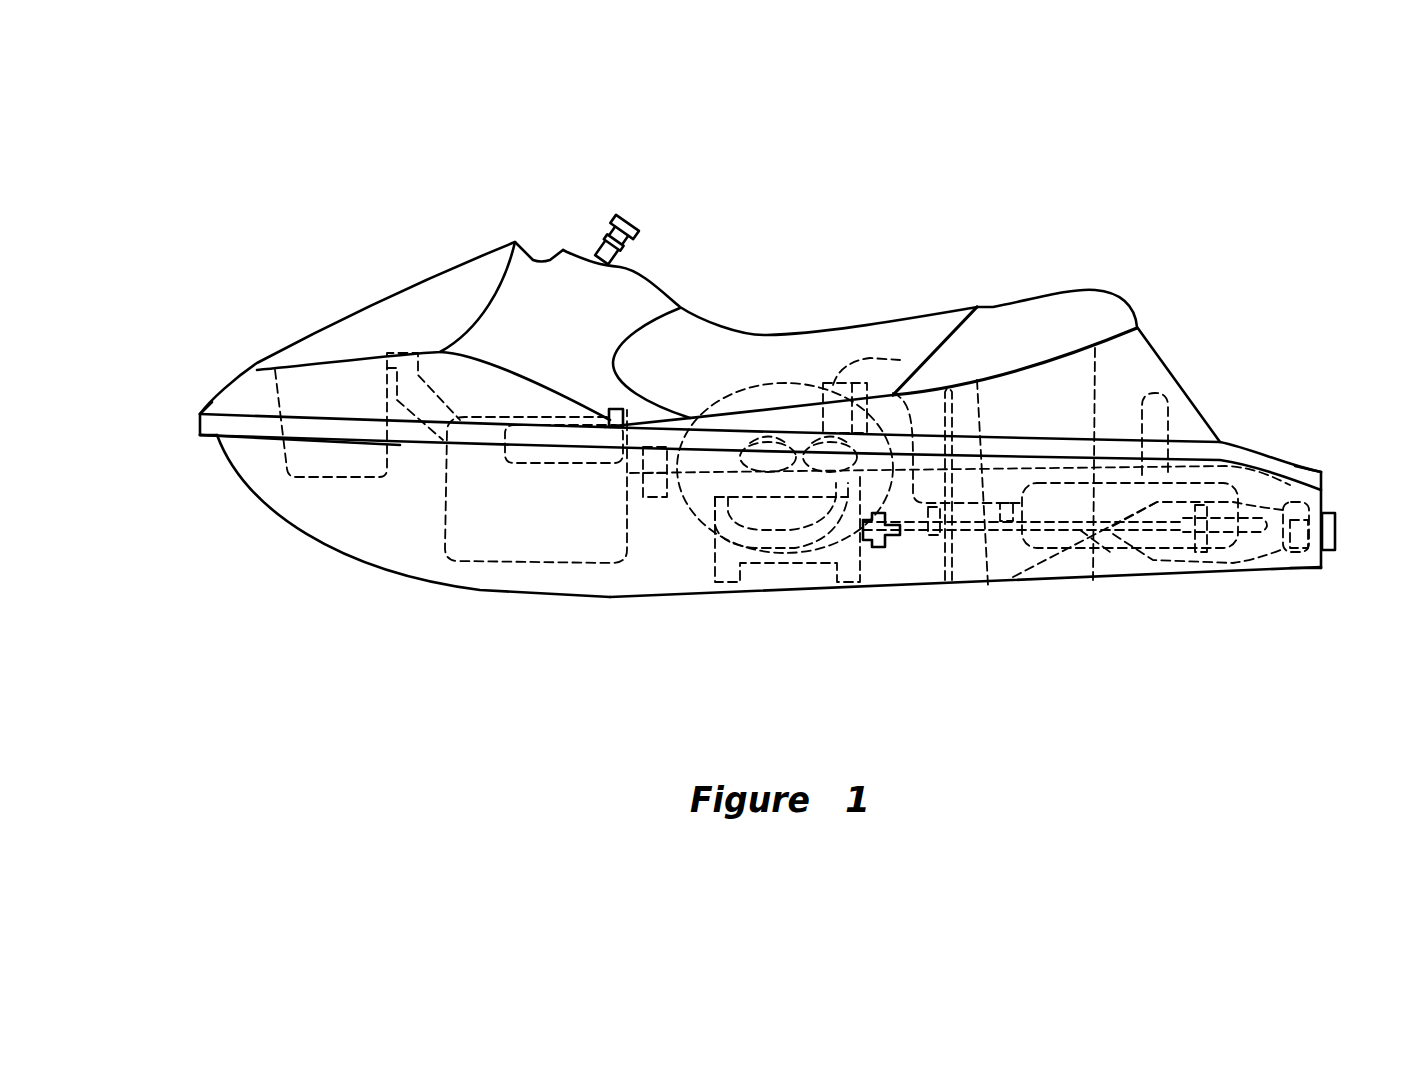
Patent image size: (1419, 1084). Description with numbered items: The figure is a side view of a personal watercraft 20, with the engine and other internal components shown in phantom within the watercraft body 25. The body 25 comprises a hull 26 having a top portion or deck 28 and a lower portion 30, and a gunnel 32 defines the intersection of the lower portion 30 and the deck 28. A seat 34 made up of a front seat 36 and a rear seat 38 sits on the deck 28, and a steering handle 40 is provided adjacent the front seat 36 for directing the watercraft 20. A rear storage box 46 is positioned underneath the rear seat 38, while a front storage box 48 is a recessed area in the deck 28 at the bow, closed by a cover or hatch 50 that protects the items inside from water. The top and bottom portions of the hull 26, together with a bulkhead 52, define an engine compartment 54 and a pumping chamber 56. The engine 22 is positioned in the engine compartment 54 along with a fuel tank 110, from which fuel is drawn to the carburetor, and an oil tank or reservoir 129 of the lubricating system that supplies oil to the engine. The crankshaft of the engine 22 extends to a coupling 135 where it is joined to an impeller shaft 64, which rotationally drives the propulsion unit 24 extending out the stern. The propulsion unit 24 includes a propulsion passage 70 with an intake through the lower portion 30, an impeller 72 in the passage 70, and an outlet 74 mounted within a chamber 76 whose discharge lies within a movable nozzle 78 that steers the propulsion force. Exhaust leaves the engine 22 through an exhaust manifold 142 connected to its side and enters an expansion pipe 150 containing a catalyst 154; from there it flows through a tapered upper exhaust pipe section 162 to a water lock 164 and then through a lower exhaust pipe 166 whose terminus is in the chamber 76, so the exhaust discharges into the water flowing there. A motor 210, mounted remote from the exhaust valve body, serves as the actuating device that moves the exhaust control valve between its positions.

The watercraft 20 is at (875, 225).
The engine 22 is at (755, 580).
The propulsion unit 24 is at (1209, 568).
The watercraft body 25 is at (282, 305).
The hull 26 is at (235, 466).
The deck 28 is at (226, 391).
The lower portion 30 is at (320, 508).
The gunnel 32 is at (273, 430).
The seat 34 is at (894, 321).
The front seat 36 is at (818, 332).
The rear seat 38 is at (1025, 298).
The steering handle 40 is at (633, 213).
The rear storage box 46 is at (1093, 368).
The front storage box 48 is at (353, 482).
The cover or hatch 50 is at (377, 297).
The bulkhead 52 is at (978, 600).
The engine compartment 54 is at (917, 573).
The pumping chamber 56 is at (1020, 557).
The impeller shaft 64 is at (1090, 547).
The propulsion passage 70 is at (1173, 553).
The impeller 72 is at (1230, 573).
The outlet 74 is at (1327, 553).
The chamber 76 is at (1313, 497).
The nozzle 78 is at (1303, 573).
The fuel tank 110 is at (563, 563).
The oil tank or reservoir 129 is at (563, 463).
The coupling 135 is at (883, 563).
The exhaust manifold 142 is at (783, 530).
The expansion pipe 150 is at (783, 383).
The catalyst 154 is at (879, 359).
The upper exhaust pipe section 162 is at (908, 408).
The water lock 164 is at (1165, 570).
The lower exhaust pipe 166 is at (1170, 420).
The motor 210 is at (657, 497).